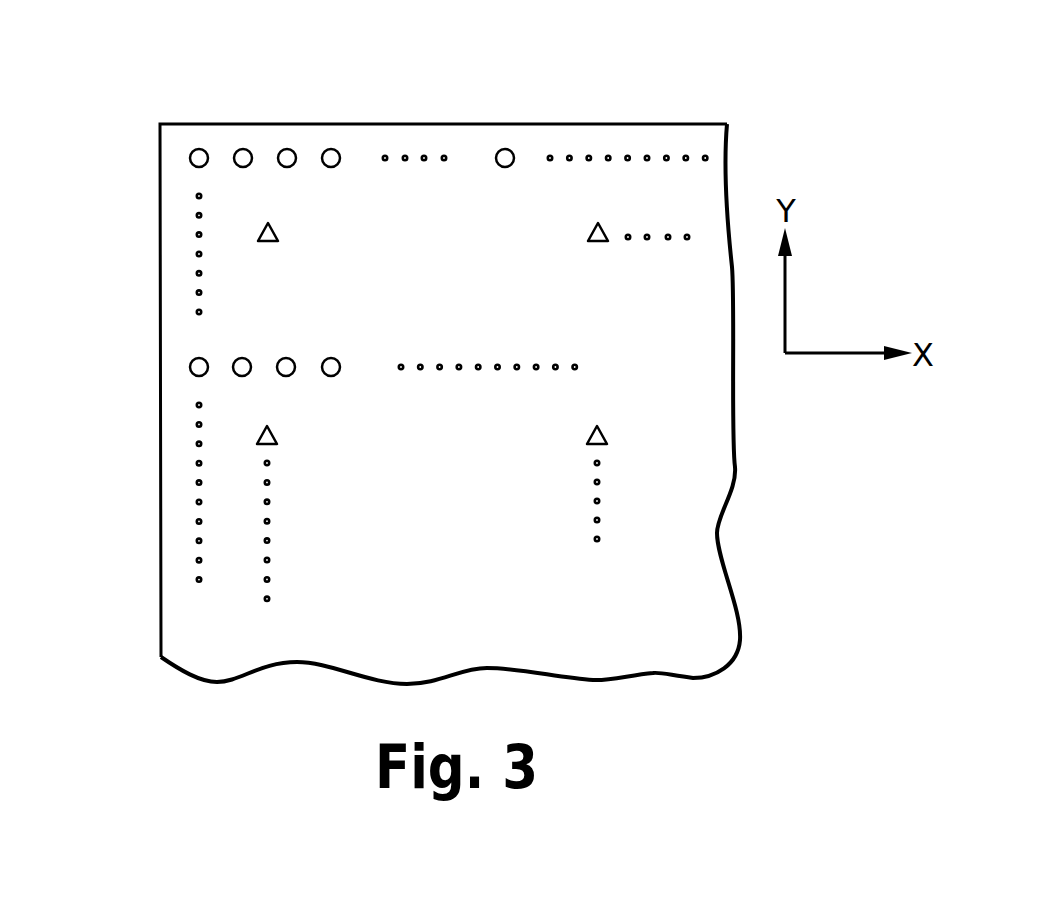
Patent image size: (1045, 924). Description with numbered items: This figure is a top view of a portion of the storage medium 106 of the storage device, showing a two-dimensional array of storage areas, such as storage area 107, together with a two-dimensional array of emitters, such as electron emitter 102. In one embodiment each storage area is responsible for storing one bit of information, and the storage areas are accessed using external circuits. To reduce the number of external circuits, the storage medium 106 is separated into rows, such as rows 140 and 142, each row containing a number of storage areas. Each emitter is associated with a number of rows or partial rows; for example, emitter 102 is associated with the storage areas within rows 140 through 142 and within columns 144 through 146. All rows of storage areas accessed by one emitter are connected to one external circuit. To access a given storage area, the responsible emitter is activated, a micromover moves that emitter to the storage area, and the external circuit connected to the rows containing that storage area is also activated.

The electron emitter 102 is at (276, 234).
The storage medium 106 is at (640, 124).
The storage area 107 is at (198, 149).
The row 140 is at (183, 158).
The row 142 is at (183, 364).
The column 144 is at (192, 152).
The column 146 is at (505, 149).